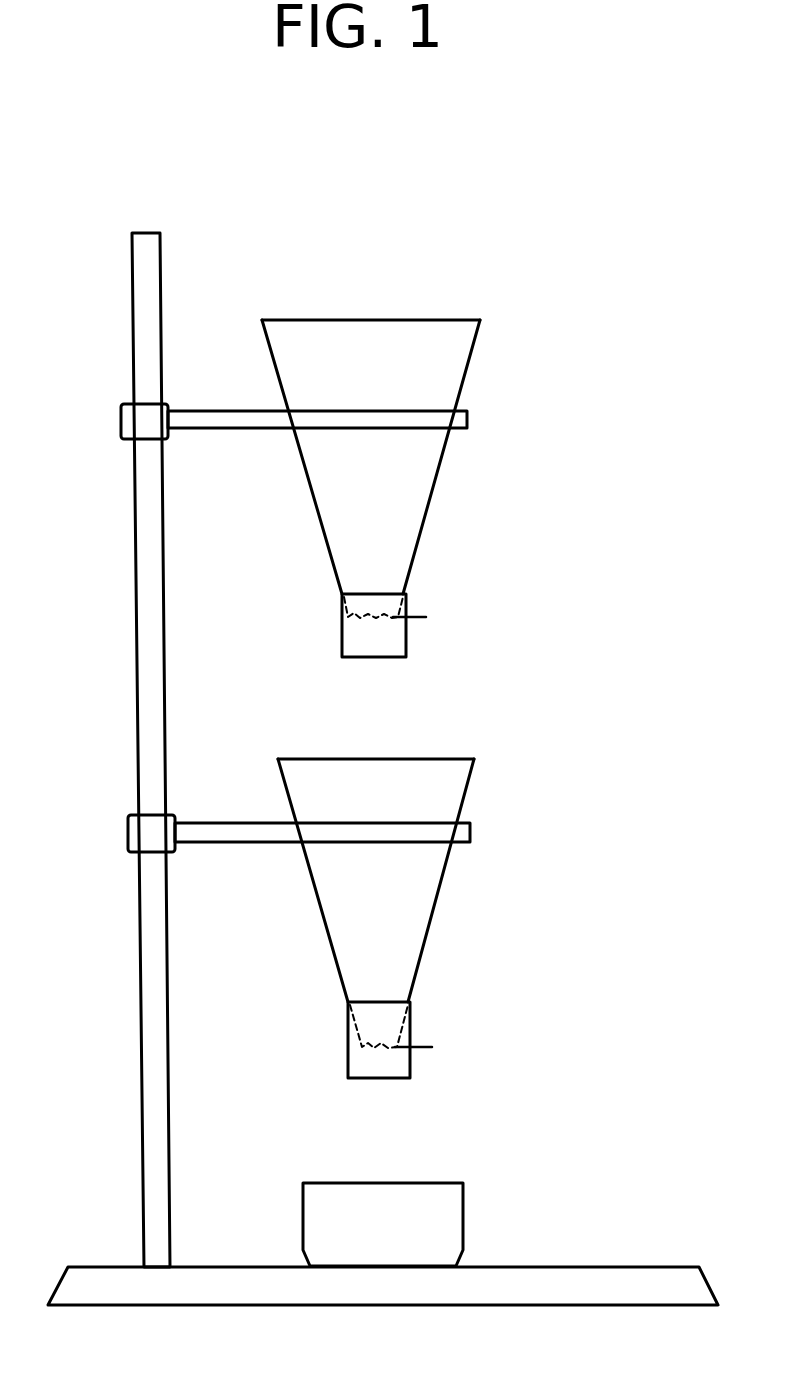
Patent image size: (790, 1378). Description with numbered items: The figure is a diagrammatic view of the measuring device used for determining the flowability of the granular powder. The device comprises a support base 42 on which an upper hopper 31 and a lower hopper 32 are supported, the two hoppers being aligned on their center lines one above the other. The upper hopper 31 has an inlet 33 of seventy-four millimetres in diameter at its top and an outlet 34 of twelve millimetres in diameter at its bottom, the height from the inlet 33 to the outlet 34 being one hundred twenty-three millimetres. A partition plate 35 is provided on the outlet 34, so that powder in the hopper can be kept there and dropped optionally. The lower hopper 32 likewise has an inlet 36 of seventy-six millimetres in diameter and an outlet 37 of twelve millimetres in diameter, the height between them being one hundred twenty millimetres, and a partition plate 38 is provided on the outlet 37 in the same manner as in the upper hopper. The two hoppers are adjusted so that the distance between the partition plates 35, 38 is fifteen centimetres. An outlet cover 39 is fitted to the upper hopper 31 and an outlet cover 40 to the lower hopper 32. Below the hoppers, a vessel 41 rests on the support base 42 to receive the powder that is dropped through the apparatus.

The upper hopper 31 is at (440, 483).
The lower hopper 32 is at (450, 886).
The inlet 33 is at (430, 318).
The outlet 34 is at (362, 616).
The partition plate 35 is at (420, 618).
The inlet 36 is at (430, 757).
The outlet 37 is at (372, 1046).
The partition plate 38 is at (432, 1047).
The outlet cover 39 is at (342, 633).
The outlet cover 40 is at (348, 1045).
The vessel 41 is at (463, 1219).
The support base 42 is at (205, 1262).